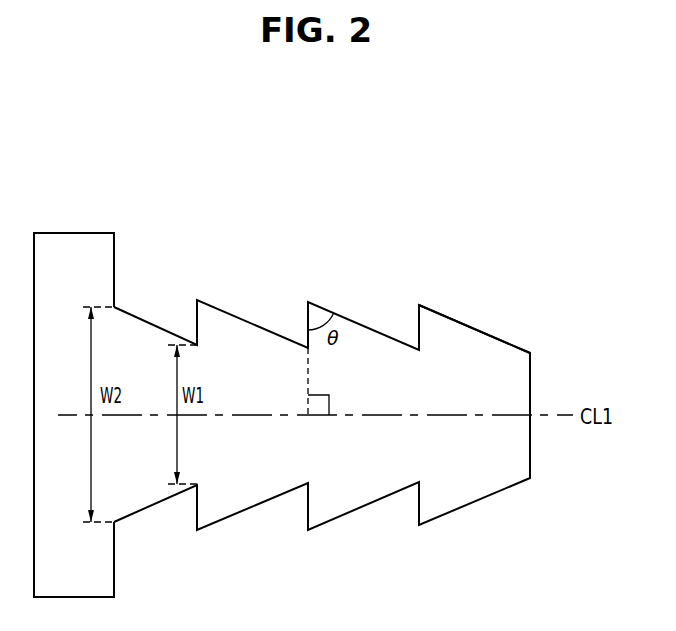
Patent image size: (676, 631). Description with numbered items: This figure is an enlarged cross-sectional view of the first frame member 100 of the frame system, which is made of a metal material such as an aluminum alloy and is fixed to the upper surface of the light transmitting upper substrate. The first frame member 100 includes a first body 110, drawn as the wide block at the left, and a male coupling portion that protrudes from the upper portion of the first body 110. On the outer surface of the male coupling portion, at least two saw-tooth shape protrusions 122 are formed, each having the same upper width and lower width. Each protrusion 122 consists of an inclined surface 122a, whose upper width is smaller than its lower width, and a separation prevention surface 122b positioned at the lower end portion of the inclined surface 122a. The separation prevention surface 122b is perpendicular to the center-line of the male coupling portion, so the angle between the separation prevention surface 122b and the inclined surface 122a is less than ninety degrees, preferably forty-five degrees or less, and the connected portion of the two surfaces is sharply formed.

The first frame member 100 is at (277, 361).
The first body 110 is at (100, 263).
The saw-tooth shape protrusion 122 is at (525, 219).
The inclined surface 122a is at (472, 327).
The separation prevention surface 122b is at (422, 322).